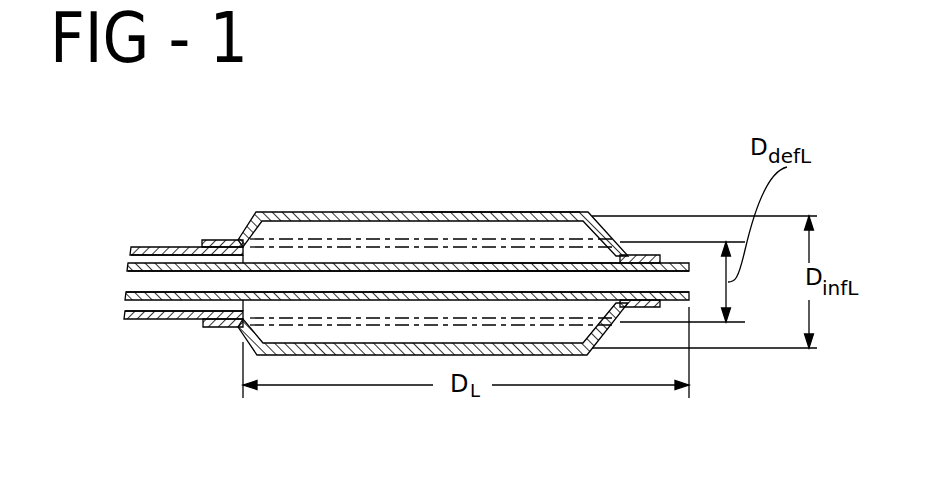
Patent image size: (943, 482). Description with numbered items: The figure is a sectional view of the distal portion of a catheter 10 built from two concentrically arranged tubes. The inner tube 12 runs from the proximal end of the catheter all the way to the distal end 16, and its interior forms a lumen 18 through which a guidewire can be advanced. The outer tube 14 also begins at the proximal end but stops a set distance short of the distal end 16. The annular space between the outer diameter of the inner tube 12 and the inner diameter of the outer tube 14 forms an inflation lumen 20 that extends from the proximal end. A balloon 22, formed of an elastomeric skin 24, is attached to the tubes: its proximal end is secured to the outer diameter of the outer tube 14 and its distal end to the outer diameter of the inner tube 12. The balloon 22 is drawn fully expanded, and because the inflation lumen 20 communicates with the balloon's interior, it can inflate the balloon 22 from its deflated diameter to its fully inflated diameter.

The catheter 10 is at (147, 197).
The inner tube 12 is at (285, 263).
The outer tube 14 is at (181, 247).
The distal end 16 is at (538, 264).
The lumen 18 is at (135, 282).
The inflation lumen 20 is at (123, 303).
The balloon 22 is at (370, 212).
The elastomeric skin 24 is at (508, 212).